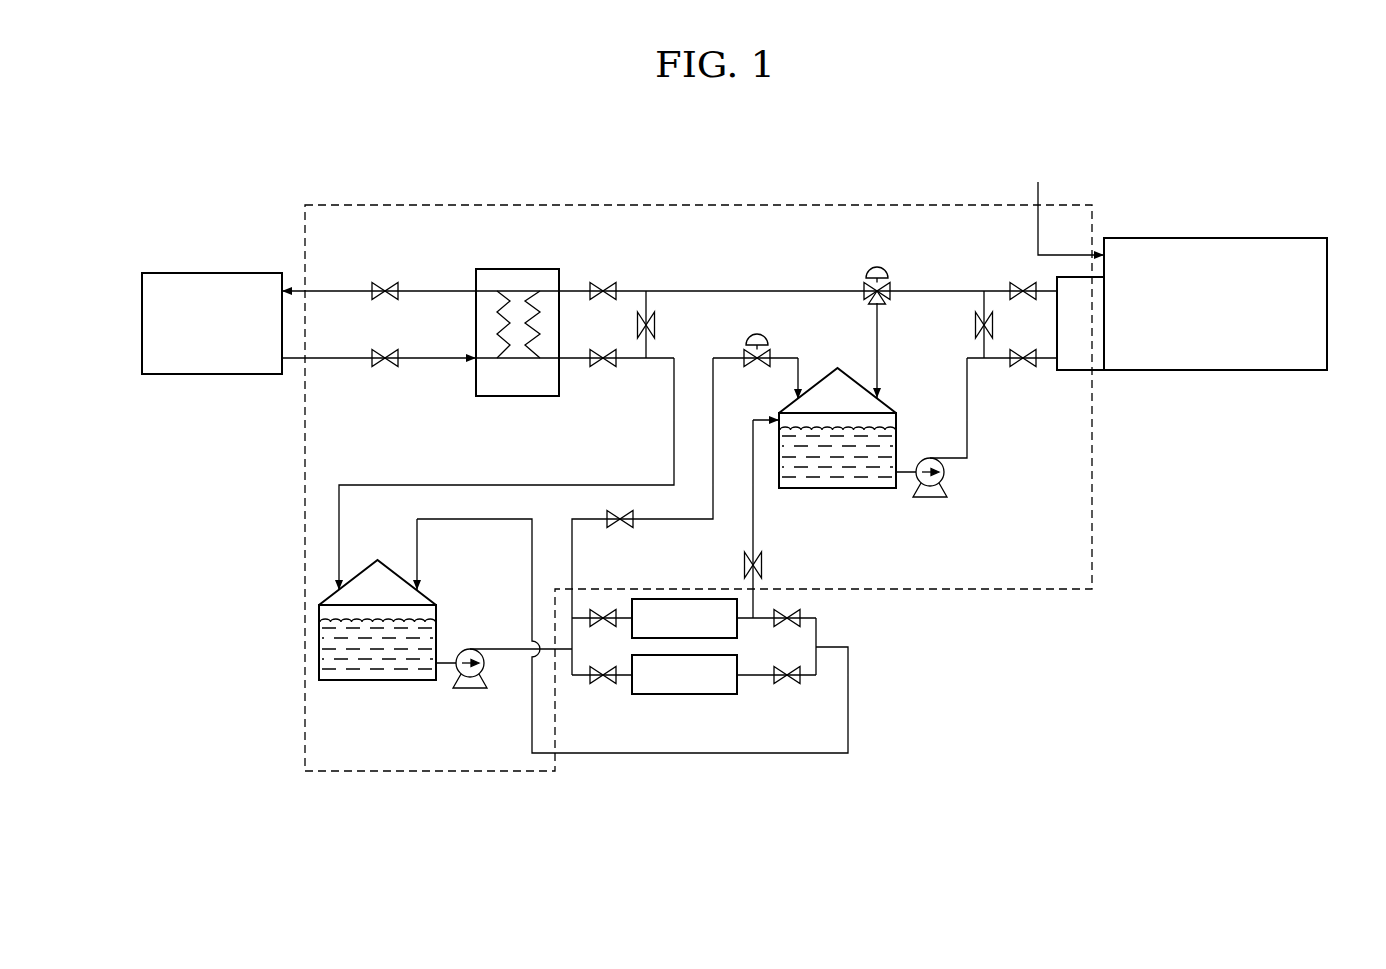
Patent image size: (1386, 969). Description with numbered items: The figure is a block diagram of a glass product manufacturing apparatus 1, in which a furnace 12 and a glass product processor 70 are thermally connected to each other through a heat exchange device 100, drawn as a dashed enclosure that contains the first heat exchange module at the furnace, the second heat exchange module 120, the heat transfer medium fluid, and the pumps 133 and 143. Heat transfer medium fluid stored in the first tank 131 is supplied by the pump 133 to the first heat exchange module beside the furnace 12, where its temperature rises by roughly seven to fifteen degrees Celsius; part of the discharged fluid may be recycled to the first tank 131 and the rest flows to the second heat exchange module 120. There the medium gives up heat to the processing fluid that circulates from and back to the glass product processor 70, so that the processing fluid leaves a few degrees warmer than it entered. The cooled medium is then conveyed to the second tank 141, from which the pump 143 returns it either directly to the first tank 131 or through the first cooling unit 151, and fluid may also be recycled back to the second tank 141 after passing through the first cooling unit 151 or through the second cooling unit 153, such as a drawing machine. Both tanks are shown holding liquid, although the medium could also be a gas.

The glass product manufacturing apparatus 1 is at (784, 162).
The furnace 12 is at (1232, 238).
The glass product processor 70 is at (176, 272).
The heat exchange device 100 is at (960, 590).
The second heat exchange module 120 is at (516, 268).
The first tank 131 is at (838, 488).
The pump 133 is at (933, 498).
The second tank 141 is at (378, 682).
The pump 143 is at (470, 691).
The first cooling unit 151 is at (675, 598).
The second cooling unit 153 is at (680, 695).